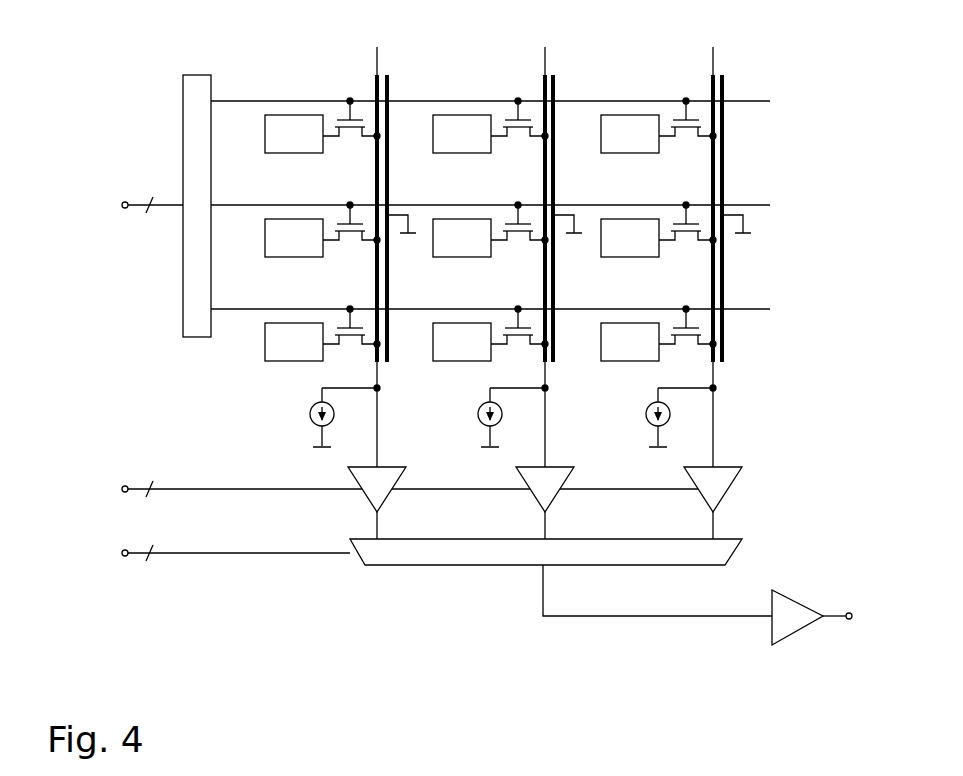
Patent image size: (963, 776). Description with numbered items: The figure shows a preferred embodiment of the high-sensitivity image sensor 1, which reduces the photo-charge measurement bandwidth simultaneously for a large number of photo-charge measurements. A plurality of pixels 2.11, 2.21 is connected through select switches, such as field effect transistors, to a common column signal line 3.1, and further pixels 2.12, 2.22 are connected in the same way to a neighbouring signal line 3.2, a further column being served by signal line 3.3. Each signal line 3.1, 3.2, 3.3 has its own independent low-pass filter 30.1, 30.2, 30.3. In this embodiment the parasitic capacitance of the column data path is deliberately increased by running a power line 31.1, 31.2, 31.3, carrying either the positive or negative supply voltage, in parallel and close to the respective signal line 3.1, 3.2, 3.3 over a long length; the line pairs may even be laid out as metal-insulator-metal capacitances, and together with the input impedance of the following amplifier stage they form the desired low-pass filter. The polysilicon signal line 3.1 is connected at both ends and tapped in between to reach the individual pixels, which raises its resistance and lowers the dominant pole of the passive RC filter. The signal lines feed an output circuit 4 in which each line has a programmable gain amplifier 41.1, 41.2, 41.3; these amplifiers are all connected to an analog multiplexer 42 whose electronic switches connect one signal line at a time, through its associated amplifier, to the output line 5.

The image sensor 1 is at (114, 58).
The pixel 2.11 is at (296, 153).
The pixel 2.12 is at (464, 153).
The pixel 2.21 is at (296, 257).
The pixel 2.22 is at (464, 257).
The signal line 3.1 is at (378, 56).
The signal line 3.2 is at (546, 56).
The signal line 3.3 is at (714, 56).
The low-pass filter 30.1 is at (370, 97).
The low-pass filter 30.2 is at (538, 97).
The low-pass filter 30.3 is at (706, 97).
The power line 31.1 is at (389, 362).
The power line 31.2 is at (555, 362).
The power line 31.3 is at (724, 362).
The output circuit 4 is at (328, 476).
The programmable gain amplifier 41.1 is at (406, 471).
The programmable gain amplifier 41.2 is at (574, 471).
The programmable gain amplifier 41.3 is at (742, 471).
The analog multiplexer 42 is at (744, 541).
The output line 5 is at (834, 620).